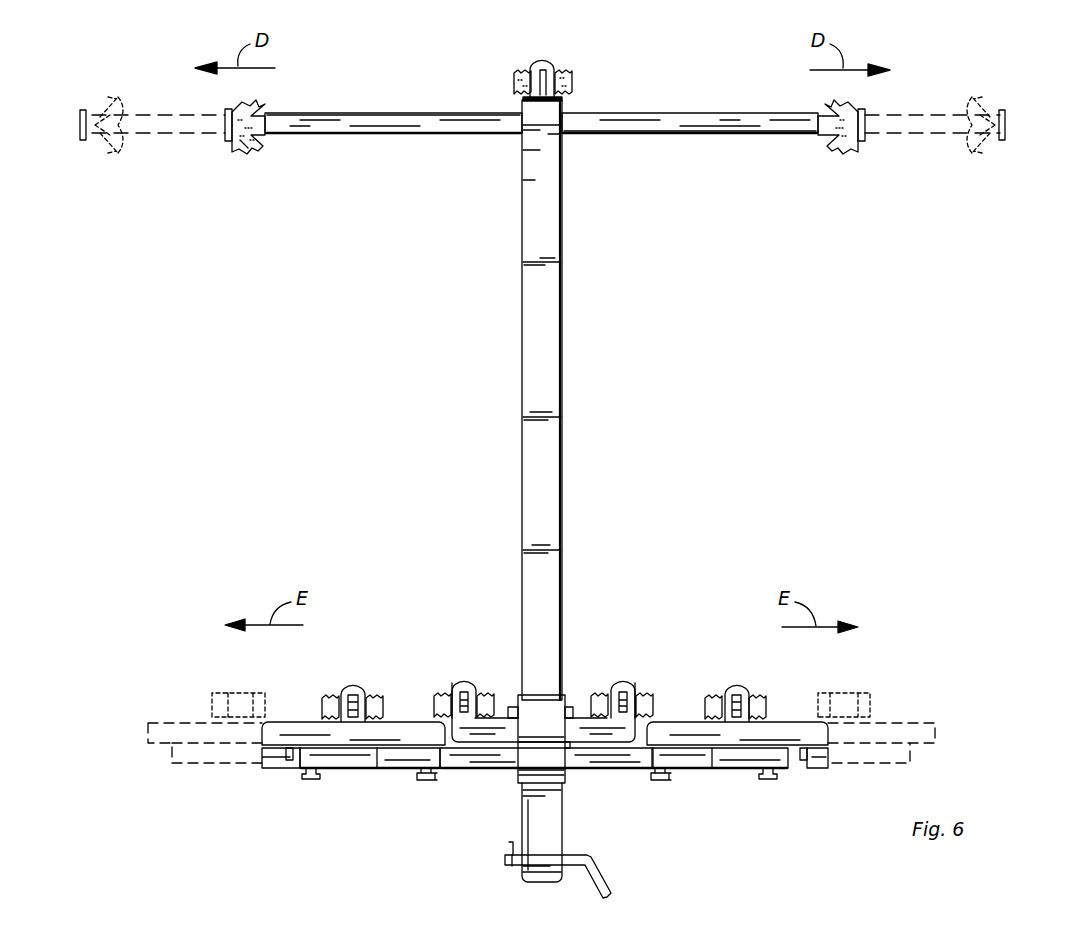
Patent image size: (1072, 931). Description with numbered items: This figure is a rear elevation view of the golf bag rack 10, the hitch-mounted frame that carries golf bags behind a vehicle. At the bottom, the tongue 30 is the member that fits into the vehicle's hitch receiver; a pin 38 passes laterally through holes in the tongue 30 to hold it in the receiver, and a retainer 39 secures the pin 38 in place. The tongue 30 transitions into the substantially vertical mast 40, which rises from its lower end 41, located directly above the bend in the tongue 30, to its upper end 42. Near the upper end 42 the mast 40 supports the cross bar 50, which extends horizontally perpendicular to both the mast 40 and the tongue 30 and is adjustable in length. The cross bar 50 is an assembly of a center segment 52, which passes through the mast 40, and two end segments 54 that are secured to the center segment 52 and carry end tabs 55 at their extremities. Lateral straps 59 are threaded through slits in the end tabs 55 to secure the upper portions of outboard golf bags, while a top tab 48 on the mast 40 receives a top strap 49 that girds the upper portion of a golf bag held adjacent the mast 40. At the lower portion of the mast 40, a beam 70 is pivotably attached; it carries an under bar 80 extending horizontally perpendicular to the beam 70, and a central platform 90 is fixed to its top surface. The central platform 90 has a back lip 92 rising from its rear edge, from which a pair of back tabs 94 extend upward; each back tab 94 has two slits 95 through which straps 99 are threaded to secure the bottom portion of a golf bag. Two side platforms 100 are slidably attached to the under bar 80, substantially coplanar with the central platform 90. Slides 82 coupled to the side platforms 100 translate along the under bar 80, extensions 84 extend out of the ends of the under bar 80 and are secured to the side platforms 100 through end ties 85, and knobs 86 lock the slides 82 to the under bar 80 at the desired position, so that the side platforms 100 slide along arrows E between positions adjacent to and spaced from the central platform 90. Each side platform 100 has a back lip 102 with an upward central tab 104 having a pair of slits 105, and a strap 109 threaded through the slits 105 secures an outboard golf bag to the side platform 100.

The golf bag rack 10 is at (382, 343).
The tongue 30 is at (552, 835).
The pin 38 is at (600, 877).
The retainer 39 is at (507, 845).
The mast 40 is at (545, 405).
The lower end 41 is at (530, 826).
The upper end 42 is at (550, 182).
The top tab 48 is at (544, 70).
The top strap 49 is at (570, 80).
The cross bar 50 is at (640, 116).
The center segment 52 is at (445, 118).
The end segments 54 is at (258, 113).
The end tabs 55 is at (228, 140).
The lateral straps 59 is at (262, 150).
The beam 70 is at (518, 770).
The under bar 80 is at (612, 767).
The slides 82 is at (396, 760).
The extensions 84 is at (310, 772).
The end ties 85 is at (288, 754).
The knobs 86 is at (426, 778).
The central platform 90 is at (586, 735).
The back lip 92 is at (494, 725).
The back tabs 94 is at (460, 688).
The slits 95 is at (465, 692).
The straps 99 is at (443, 698).
The side platforms 100 is at (262, 745).
The back lip 102 is at (300, 727).
The central tab 104 is at (346, 690).
The slits 105 is at (354, 696).
The strap 109 is at (330, 700).